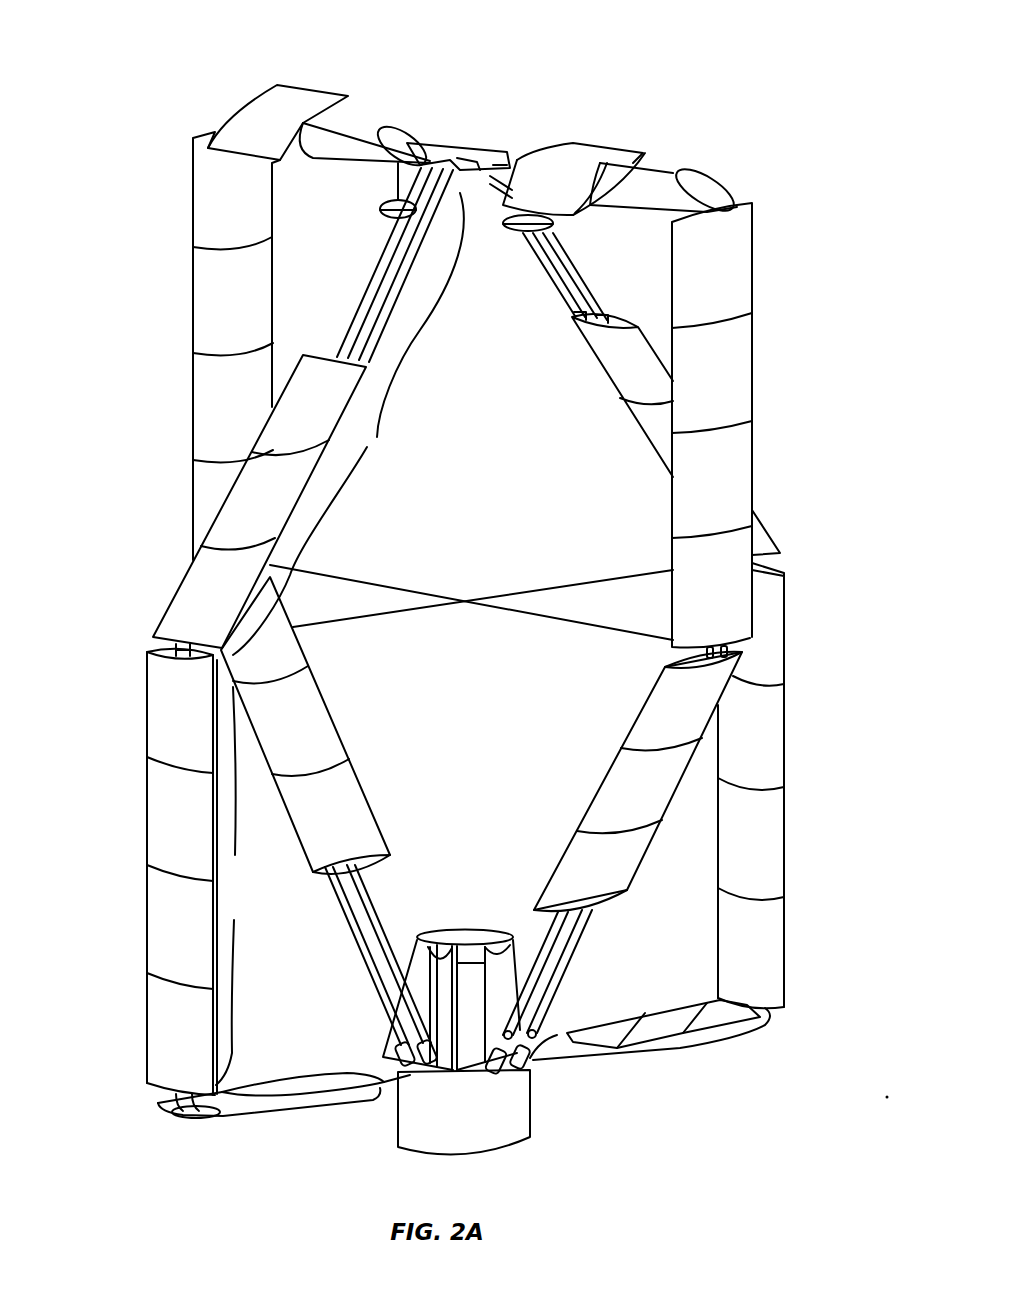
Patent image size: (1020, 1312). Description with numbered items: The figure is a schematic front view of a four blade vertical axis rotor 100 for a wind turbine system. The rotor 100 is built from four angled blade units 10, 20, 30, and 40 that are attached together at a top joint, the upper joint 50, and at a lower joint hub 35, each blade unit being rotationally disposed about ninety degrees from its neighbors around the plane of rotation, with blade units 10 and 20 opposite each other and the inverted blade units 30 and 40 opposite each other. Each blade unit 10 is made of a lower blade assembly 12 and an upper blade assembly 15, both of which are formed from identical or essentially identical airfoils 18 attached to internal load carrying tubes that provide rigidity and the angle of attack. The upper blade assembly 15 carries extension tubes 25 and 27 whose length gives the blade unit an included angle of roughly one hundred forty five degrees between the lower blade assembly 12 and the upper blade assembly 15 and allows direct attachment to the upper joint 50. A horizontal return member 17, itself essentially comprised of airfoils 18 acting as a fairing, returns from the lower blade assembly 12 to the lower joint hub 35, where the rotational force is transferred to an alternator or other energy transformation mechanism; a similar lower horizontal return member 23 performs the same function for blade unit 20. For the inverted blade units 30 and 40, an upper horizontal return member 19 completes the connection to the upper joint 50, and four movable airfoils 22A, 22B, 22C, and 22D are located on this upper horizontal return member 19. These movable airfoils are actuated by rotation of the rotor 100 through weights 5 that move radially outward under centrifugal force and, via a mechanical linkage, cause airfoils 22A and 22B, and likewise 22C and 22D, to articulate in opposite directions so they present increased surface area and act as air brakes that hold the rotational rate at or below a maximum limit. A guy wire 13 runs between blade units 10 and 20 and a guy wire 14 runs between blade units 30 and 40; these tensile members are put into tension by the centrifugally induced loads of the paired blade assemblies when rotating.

The four blade vertical axis rotor 100 is at (752, 56).
The blade unit 10 is at (131, 808).
The blade unit 20 is at (792, 786).
The blade unit 30 is at (589, 778).
The blade unit 40 is at (345, 714).
The lower blade assembly 12 is at (235, 855).
The guy wire 13 is at (582, 582).
The guy wire 14 is at (357, 580).
The upper blade assembly 15 is at (377, 437).
The horizontal return member 17 is at (188, 1130).
The airfoil 18 is at (200, 300).
The upper horizontal return member 19 is at (290, 45).
The movable airfoil 22A is at (302, 97).
The movable airfoil 22B is at (360, 133).
The movable airfoil 22C is at (592, 157).
The movable airfoil 22D is at (668, 170).
The lower horizontal return member 23 is at (582, 1060).
The extension tube 25 is at (376, 326).
The extension tube 27 is at (372, 272).
The lower joint hub 35 is at (398, 1044).
The weight 5 is at (393, 222).
The upper joint 50 is at (453, 145).